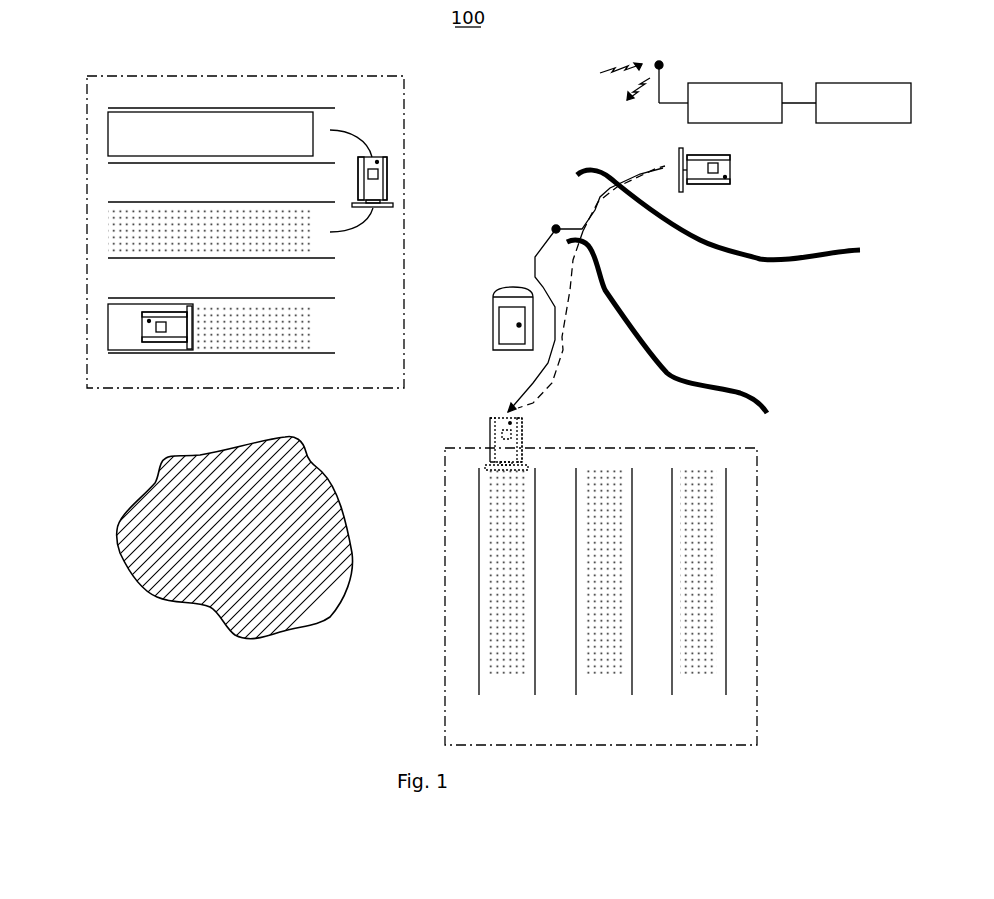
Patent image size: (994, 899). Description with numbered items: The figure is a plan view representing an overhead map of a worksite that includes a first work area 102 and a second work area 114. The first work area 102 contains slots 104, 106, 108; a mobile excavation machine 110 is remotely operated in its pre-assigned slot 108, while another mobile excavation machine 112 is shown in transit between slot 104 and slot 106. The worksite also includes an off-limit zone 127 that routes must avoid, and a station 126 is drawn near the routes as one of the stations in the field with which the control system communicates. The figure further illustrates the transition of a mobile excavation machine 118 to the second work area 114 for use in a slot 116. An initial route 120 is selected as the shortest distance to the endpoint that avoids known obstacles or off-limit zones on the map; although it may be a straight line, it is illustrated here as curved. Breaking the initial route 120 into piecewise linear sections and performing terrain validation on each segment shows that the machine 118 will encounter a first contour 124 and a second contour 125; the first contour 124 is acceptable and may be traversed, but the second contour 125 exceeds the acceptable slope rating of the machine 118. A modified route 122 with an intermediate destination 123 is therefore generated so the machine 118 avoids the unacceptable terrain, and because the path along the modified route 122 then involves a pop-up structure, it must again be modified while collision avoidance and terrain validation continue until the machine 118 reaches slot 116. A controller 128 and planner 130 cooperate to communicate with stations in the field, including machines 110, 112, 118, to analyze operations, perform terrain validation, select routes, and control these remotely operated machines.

The first work area 102 is at (272, 76).
The slot 104 is at (128, 107).
The slot 106 is at (128, 202).
The slot 108 is at (128, 297).
The mobile excavation machine 110 is at (165, 340).
The mobile excavation machine 112 is at (393, 177).
The second work area 114 is at (757, 545).
The slot 116 is at (537, 668).
The mobile excavation machine 118 is at (732, 175).
The initial route 120 is at (562, 357).
The modified route 122 is at (532, 277).
The intermediate destination 123 is at (556, 229).
The first contour 124 is at (752, 253).
The second contour 125 is at (673, 373).
The charging / docking station 126 is at (493, 332).
The off-limit zone 127 is at (120, 552).
The controller 128 is at (734, 80).
The planner 130 is at (855, 80).